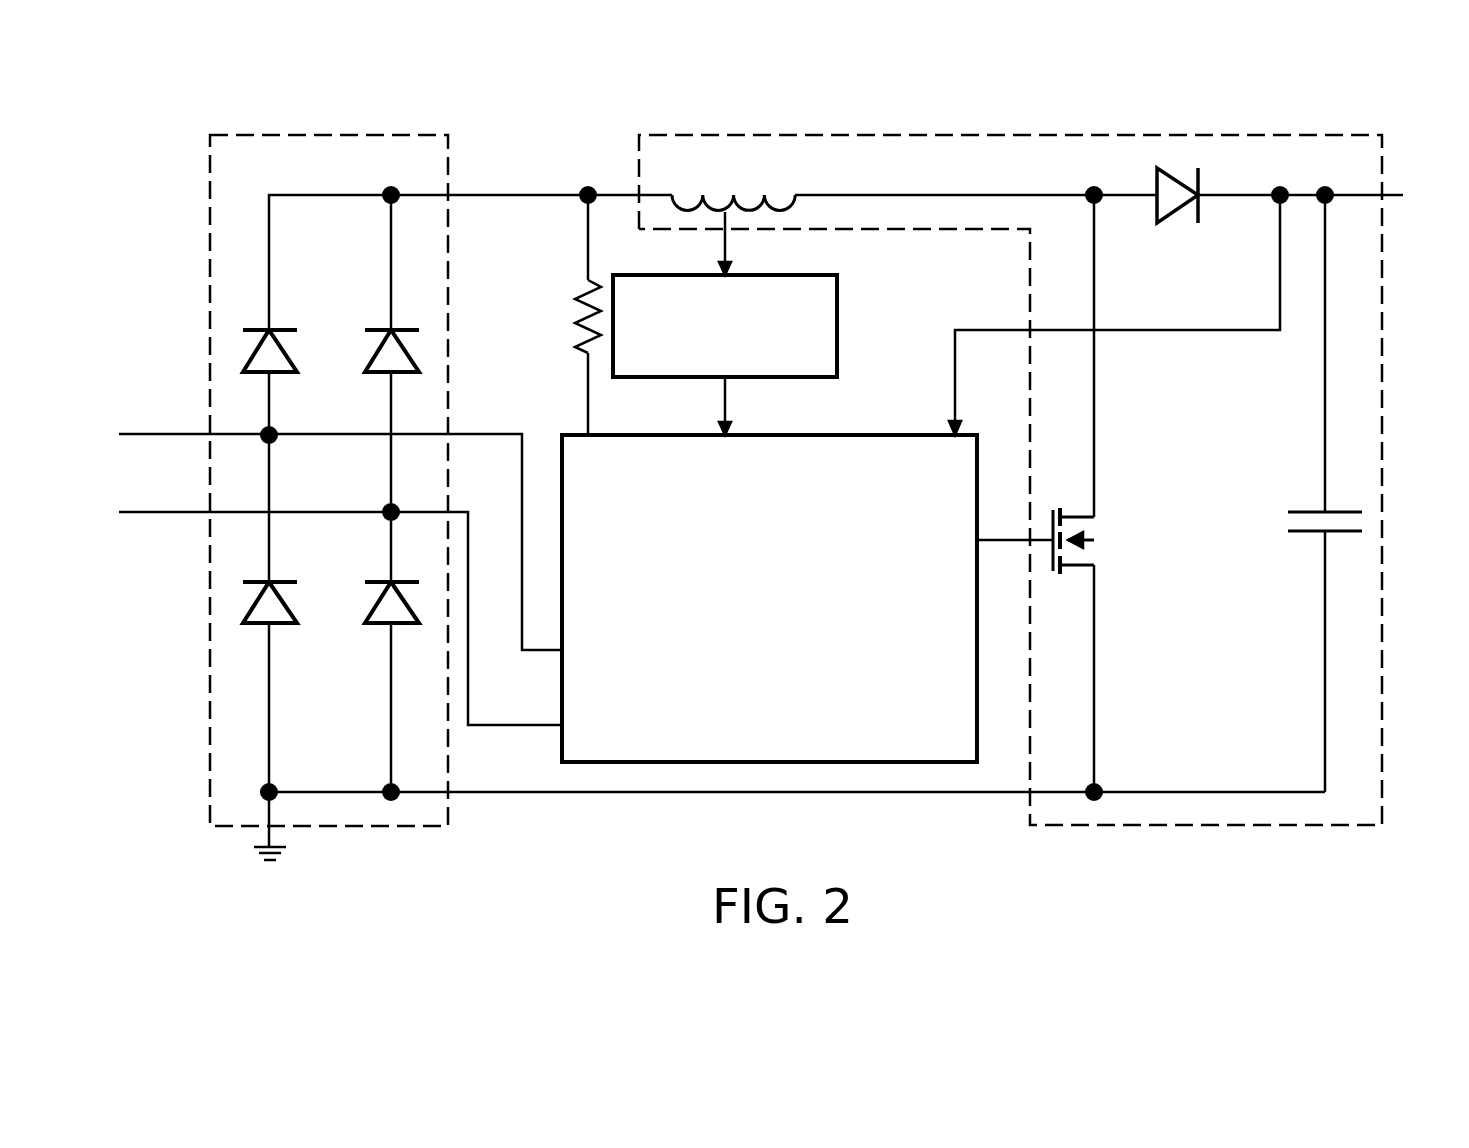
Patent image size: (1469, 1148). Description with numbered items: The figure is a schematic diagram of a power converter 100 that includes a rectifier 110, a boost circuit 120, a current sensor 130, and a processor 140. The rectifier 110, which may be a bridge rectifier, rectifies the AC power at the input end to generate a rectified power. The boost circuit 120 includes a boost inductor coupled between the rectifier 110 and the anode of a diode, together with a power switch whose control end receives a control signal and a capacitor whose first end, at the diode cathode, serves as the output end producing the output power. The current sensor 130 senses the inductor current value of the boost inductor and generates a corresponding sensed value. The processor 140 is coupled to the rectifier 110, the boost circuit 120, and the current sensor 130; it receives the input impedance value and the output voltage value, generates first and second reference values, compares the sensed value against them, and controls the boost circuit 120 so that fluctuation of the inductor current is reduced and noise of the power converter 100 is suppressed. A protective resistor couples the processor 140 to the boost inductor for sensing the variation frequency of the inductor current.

The power converter 100 is at (1459, 859).
The rectifier 110 is at (328, 135).
The boost circuit 120 is at (1103, 135).
The current sensor 130 is at (840, 326).
The processor 140 is at (894, 435).